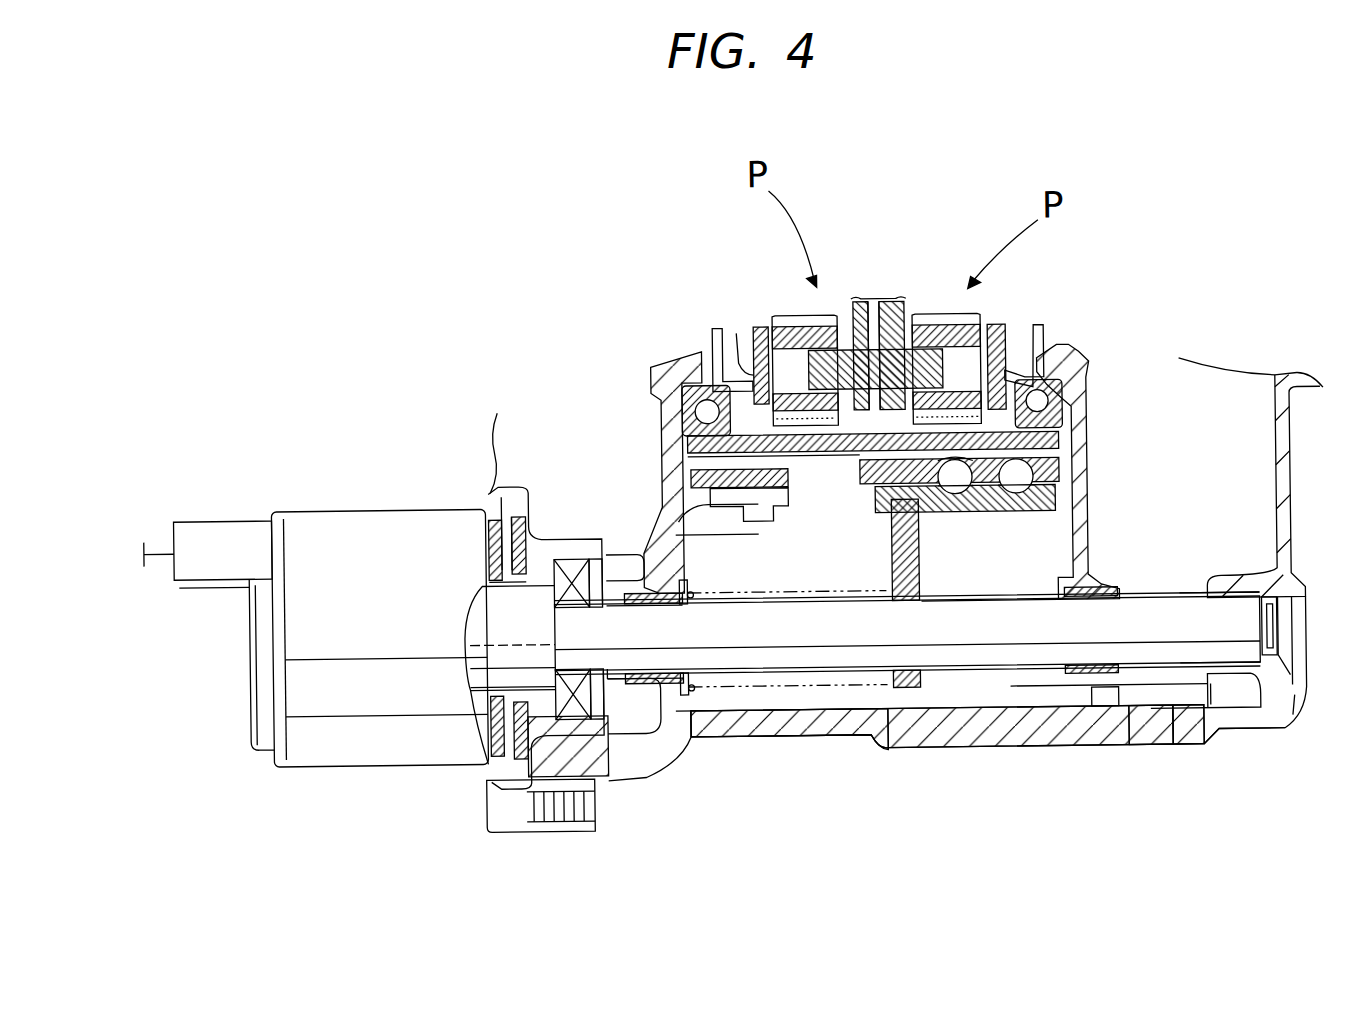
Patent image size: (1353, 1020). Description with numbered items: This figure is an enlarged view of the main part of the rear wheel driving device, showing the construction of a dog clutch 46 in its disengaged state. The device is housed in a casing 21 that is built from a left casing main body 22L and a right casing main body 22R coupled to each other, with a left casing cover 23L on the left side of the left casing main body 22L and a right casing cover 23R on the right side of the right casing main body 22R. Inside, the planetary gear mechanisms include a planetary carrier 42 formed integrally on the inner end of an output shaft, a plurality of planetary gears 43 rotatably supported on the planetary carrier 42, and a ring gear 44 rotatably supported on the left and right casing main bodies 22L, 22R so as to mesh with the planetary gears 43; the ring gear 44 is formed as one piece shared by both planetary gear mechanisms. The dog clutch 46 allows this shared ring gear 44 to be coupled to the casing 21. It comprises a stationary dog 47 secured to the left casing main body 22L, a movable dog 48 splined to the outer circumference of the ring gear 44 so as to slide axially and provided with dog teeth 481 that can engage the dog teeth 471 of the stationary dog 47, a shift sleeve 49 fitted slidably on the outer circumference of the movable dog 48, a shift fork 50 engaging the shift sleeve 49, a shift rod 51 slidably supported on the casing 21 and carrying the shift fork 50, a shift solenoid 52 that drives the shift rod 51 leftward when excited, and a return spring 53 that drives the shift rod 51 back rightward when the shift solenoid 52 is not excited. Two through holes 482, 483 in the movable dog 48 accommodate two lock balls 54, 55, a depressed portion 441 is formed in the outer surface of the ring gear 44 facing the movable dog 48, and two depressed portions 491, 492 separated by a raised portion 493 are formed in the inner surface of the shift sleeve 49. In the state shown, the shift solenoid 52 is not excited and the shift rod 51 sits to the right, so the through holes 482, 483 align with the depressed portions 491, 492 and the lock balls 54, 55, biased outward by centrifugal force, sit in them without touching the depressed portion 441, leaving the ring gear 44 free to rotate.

The casing 21 is at (910, 752).
The left casing main body 22L is at (826, 750).
The right casing main body 22R is at (1130, 748).
The left casing cover 23L is at (588, 750).
The right casing cover 23R is at (1198, 750).
The planetary carrier 42 is at (759, 325).
The planetary gear 43 is at (794, 311).
The ring gear 44 is at (858, 442).
The depressed portion 441 is at (936, 313).
The dog clutch 46 is at (937, 688).
The stationary dog 47 is at (692, 478).
The dog teeth 471 is at (750, 495).
The movable dog 48 is at (846, 490).
The dog teeth 481 is at (688, 452).
The through hole 482 is at (1062, 412).
The through hole 483 is at (1040, 444).
The shift sleeve 49 is at (1050, 516).
The depressed portion 491 is at (955, 492).
The depressed portion 492 is at (1033, 487).
The raised portion 493 is at (1032, 514).
The shift fork 50 is at (900, 602).
The shift rod 51 is at (1185, 604).
The shift solenoid 52 is at (318, 493).
The return spring 53 is at (690, 694).
The lock ball 54 is at (958, 490).
The lock ball 55 is at (1045, 471).